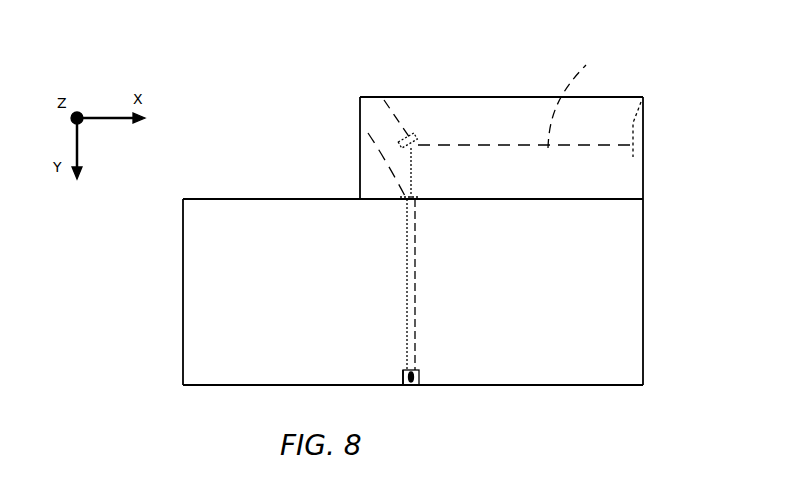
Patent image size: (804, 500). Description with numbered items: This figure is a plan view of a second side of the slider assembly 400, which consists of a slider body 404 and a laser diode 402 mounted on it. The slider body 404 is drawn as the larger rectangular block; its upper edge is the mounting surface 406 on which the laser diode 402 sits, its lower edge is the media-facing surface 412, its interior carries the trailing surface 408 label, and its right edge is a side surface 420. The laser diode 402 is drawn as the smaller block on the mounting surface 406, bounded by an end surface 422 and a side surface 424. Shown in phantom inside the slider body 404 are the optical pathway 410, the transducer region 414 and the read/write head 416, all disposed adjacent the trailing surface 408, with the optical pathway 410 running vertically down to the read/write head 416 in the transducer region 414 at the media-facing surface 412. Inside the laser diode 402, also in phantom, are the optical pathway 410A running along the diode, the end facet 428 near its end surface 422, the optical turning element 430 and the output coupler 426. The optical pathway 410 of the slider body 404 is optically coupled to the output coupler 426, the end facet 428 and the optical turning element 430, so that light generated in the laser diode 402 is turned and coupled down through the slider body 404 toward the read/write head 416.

The slider assembly 400 is at (260, 36).
The laser diode 402 is at (439, 63).
The slider body 404 is at (265, 148).
The mounting surface 406 is at (281, 198).
The trailing surface 408 is at (369, 284).
The optical pathway 410 is at (418, 276).
The optical pathway 410A is at (597, 100).
The media-facing surface 412 is at (550, 385).
The transducer region 414 is at (403, 385).
The read/write head 416 is at (416, 385).
The side surface 420 is at (643, 293).
The end surface 422 is at (643, 145).
The side surface 424 is at (525, 127).
The output coupler 426 is at (360, 130).
The end facet 428 is at (647, 95).
The optical turning element 430 is at (382, 97).